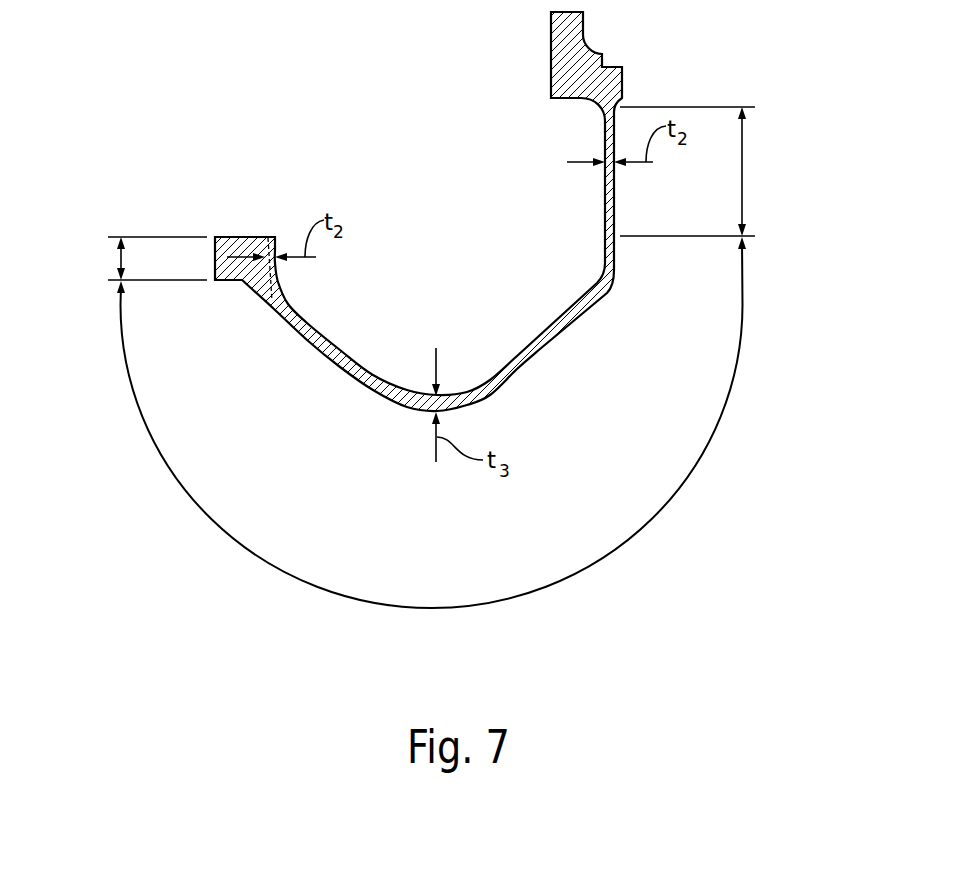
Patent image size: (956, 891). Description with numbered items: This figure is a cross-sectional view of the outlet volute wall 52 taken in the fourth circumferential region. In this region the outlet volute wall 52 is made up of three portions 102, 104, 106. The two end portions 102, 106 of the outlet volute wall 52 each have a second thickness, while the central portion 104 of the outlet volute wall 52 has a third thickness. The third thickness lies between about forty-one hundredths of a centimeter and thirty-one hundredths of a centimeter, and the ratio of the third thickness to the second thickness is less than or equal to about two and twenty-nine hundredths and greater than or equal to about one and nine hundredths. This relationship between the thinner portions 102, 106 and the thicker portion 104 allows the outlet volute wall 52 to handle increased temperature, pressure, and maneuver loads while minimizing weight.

The outlet volute wall 52 is at (312, 324).
The portion of outlet volute wall 102 is at (103, 259).
The portion of outlet volute wall 104 is at (205, 513).
The portion of outlet volute wall 106 is at (742, 185).